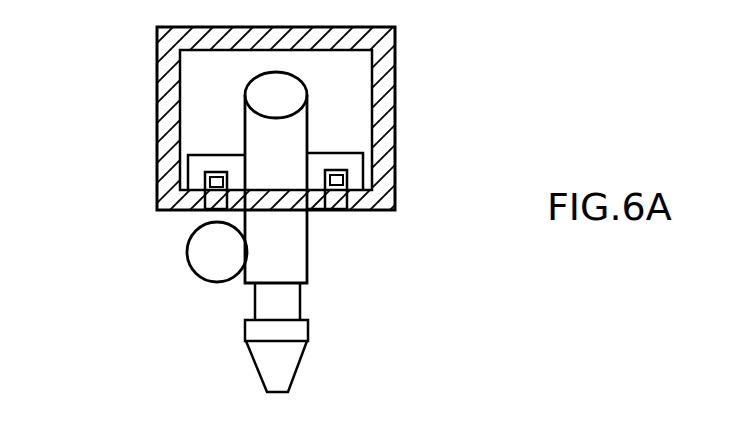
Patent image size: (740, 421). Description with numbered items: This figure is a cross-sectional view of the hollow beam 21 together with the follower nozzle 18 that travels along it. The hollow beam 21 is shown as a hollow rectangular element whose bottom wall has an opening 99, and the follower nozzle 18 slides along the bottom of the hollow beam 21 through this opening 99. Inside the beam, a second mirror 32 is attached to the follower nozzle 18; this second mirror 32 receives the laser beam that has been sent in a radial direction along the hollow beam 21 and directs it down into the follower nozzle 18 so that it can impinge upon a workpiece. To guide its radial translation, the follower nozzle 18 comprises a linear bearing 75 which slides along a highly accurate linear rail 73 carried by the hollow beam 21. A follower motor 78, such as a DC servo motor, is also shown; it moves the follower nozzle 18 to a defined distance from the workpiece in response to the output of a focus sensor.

The hollow beam 21 is at (157, 75).
The second mirror 32 is at (285, 90).
The linear bearing 75 is at (340, 154).
The linear rail 73 is at (335, 190).
The opening 99 is at (317, 203).
The follower motor 78 is at (208, 256).
The follower nozzle 18 is at (356, 327).